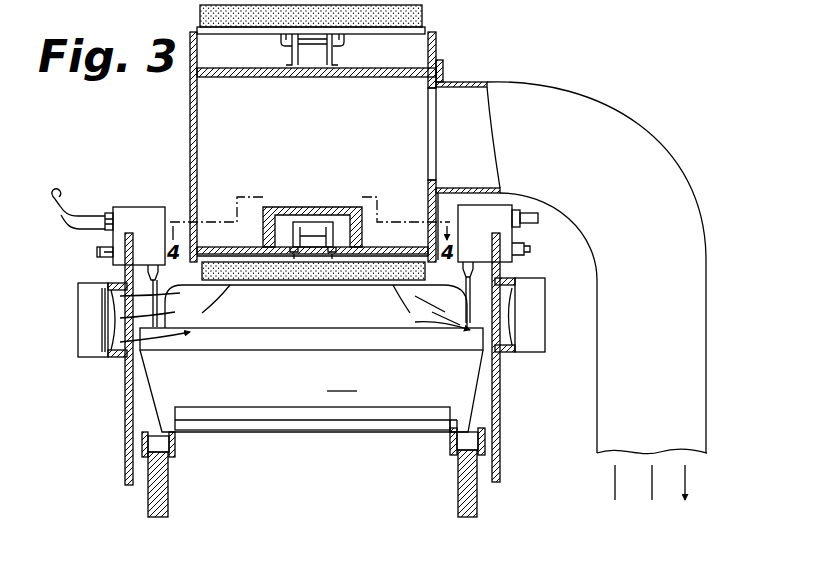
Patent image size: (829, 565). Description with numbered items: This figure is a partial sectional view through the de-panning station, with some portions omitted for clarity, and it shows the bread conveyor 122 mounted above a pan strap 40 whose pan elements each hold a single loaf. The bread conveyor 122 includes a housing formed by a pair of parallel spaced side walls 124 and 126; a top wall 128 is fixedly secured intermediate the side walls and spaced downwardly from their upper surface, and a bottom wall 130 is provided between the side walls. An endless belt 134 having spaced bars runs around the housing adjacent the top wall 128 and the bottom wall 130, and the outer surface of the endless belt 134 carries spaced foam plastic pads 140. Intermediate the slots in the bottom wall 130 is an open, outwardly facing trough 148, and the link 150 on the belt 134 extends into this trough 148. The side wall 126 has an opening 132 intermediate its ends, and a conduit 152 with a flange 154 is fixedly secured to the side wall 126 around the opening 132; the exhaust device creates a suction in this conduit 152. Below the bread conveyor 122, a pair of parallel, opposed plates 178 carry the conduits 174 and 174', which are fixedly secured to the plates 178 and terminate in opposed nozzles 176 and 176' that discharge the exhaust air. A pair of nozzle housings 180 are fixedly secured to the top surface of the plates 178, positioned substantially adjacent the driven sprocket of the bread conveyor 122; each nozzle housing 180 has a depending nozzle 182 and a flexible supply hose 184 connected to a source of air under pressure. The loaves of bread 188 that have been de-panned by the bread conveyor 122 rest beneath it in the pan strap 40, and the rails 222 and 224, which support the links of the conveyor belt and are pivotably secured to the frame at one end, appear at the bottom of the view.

The pan strap 40 is at (295, 338).
The bread conveyor 122 is at (286, 156).
The side wall 124 is at (198, 152).
The side wall 126 is at (430, 80).
The top wall 128 is at (300, 77).
The bottom wall 130 is at (415, 245).
The opening 132 is at (428, 136).
The endless belt 134 is at (425, 30).
The foam plastic pads 140 is at (200, 16).
The trough 148 is at (290, 207).
The link 150 is at (318, 232).
The conduit 152 is at (572, 95).
The flange 154 is at (443, 66).
The conduit 174 is at (539, 315).
The conduit 174' is at (62, 320).
The nozzle 176 is at (544, 319).
The nozzle 176' is at (77, 320).
The plates 178 is at (125, 420).
The nozzle housing 180 is at (148, 215).
The nozzle 182 is at (120, 272).
The flexible supply hose 184 is at (84, 203).
The loaves of bread 188 is at (255, 320).
The rail 222 is at (160, 492).
The rail 224 is at (465, 500).